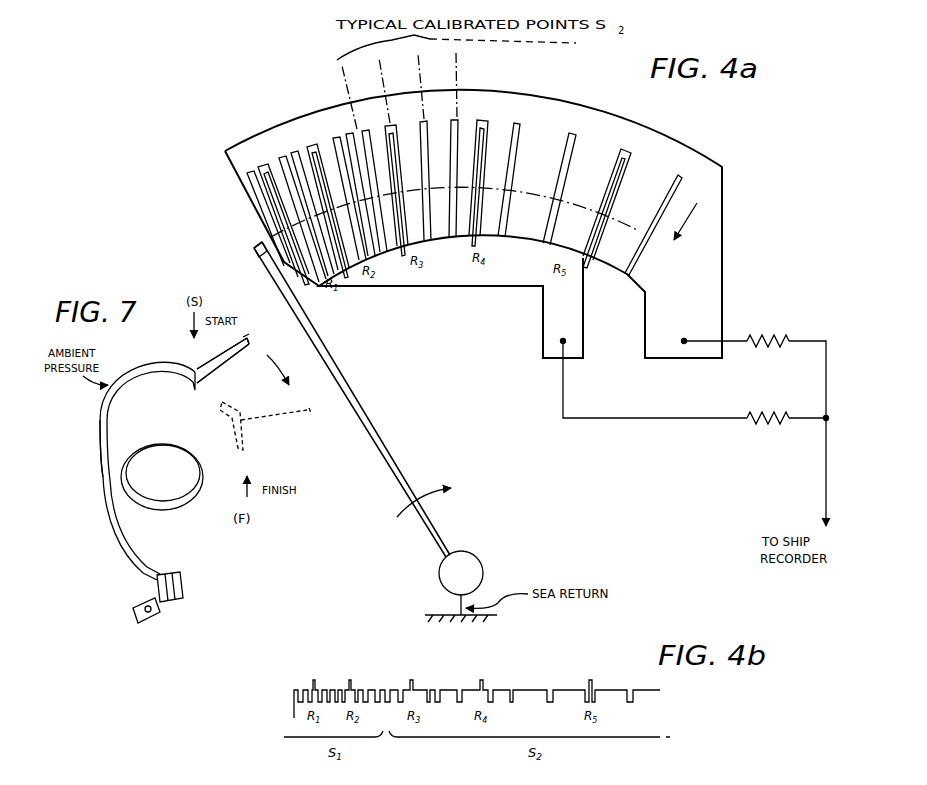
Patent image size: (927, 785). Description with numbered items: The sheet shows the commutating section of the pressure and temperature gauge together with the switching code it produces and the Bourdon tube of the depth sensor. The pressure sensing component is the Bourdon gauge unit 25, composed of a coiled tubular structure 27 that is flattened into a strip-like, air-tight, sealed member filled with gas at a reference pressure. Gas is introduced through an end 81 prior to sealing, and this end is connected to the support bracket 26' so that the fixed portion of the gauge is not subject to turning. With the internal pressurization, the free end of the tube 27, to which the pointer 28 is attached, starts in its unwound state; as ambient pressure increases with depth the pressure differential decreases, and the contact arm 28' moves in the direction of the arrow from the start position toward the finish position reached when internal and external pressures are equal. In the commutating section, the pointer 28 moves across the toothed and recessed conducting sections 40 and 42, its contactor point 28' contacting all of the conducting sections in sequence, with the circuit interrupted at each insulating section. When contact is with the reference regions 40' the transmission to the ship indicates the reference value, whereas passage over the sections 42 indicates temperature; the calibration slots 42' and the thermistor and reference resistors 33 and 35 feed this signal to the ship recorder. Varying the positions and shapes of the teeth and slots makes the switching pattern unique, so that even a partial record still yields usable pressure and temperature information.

In FIG. 4A, the conducting sections 40 is at (473, 224).
In FIG. 4A, the conducting sections 42 is at (464, 178).
In FIG. 4A, the calibration slots 42' is at (444, 166).
In FIG. 4A, the reference regions 40' is at (405, 180).
In FIG. 4A, the pointer 28 is at (375, 432).
In FIG. 7, the pointer 28 is at (223, 364).
In FIG. 4A, the contactor point 28' is at (242, 235).
In FIG. 7, the contactor point 28' is at (261, 340).
In FIG. 4A, the thermistor resistor R_TH 33 is at (787, 338).
In FIG. 4A, the reference resistor R_REF 35 is at (769, 421).
In FIG. 7, the Bourdon gauge unit 25 is at (192, 543).
In FIG. 7, the coiled tubular structure 27 is at (102, 426).
In FIG. 7, the end 81 is at (183, 592).
In FIG. 7, the support bracket 26' is at (159, 622).